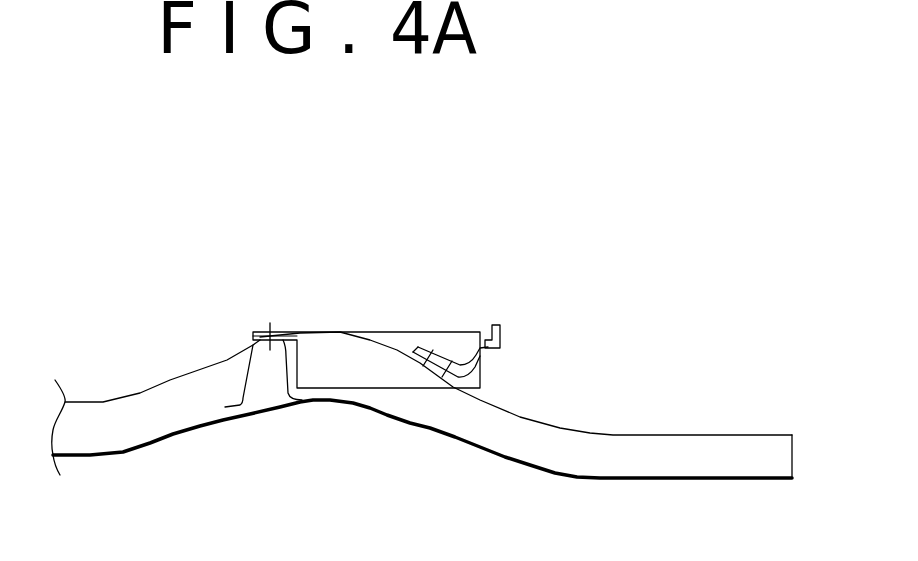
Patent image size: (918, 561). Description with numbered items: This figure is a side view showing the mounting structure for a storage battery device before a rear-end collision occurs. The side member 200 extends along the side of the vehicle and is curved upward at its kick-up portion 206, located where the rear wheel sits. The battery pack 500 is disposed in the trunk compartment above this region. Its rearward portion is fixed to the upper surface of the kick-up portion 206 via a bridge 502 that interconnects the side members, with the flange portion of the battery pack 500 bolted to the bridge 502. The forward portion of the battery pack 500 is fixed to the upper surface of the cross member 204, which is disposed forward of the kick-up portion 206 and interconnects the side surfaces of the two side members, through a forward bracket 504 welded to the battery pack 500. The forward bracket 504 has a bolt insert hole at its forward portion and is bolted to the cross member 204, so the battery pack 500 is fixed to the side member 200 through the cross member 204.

The side member 200 is at (660, 433).
The cross member 204 is at (243, 375).
The kick-up portion 206 is at (337, 404).
The battery pack 500 is at (405, 330).
The bridge 502 is at (508, 333).
The forward bracket 504 is at (277, 330).